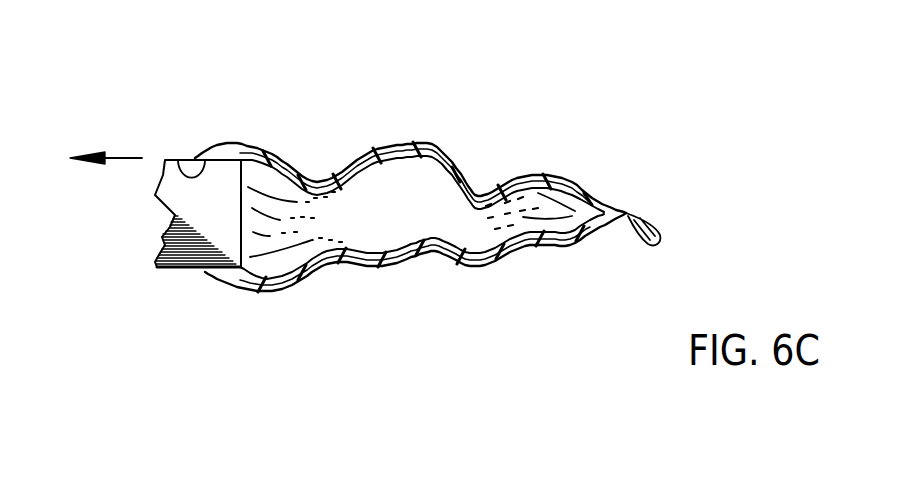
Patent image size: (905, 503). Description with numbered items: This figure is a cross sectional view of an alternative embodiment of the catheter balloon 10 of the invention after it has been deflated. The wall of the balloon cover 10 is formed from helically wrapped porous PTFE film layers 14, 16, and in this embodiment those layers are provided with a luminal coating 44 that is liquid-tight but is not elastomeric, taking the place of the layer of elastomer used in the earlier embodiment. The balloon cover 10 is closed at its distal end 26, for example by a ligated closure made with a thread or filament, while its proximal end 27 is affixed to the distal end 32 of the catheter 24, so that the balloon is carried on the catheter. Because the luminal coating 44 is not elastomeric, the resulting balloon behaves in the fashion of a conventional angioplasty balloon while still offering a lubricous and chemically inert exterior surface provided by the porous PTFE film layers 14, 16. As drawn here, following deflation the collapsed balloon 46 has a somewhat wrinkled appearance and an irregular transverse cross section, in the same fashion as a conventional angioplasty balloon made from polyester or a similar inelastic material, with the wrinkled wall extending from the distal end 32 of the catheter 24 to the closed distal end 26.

The balloon cover 10 is at (435, 224).
The helically wrapped porous PTFE film layer 14 is at (434, 177).
The helically wrapped porous PTFE film layer 16 is at (458, 148).
The catheter 24 is at (170, 272).
The distal end 26 is at (620, 213).
The proximal end 27 is at (117, 157).
The distal end of catheter 32 is at (180, 160).
The luminal coating 44 is at (553, 177).
The collapsed balloon 46 is at (352, 146).